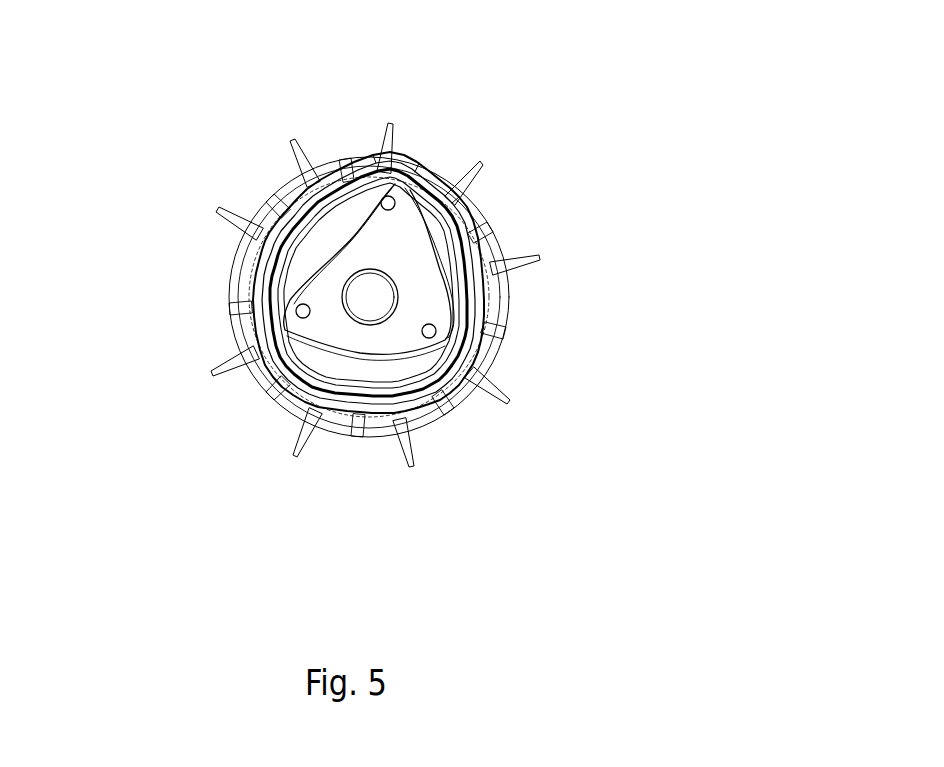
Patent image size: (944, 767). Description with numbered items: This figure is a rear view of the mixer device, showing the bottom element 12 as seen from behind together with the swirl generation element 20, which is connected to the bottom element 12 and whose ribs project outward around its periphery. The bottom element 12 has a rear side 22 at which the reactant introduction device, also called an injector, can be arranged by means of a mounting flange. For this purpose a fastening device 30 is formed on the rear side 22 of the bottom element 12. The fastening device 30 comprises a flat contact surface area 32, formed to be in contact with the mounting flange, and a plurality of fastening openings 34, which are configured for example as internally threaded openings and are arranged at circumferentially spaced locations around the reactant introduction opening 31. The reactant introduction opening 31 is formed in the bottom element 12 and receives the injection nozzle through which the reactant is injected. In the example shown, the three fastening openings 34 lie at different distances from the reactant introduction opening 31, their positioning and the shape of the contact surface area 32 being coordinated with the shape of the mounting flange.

The bottom element 12 is at (447, 166).
The swirl generation element 20 is at (498, 217).
The rear side 22 is at (455, 383).
The fastening device 30 is at (305, 366).
The reactant introduction opening 31 is at (376, 297).
The flat contact surface area 32 is at (373, 222).
The fastening openings 34 is at (398, 203).